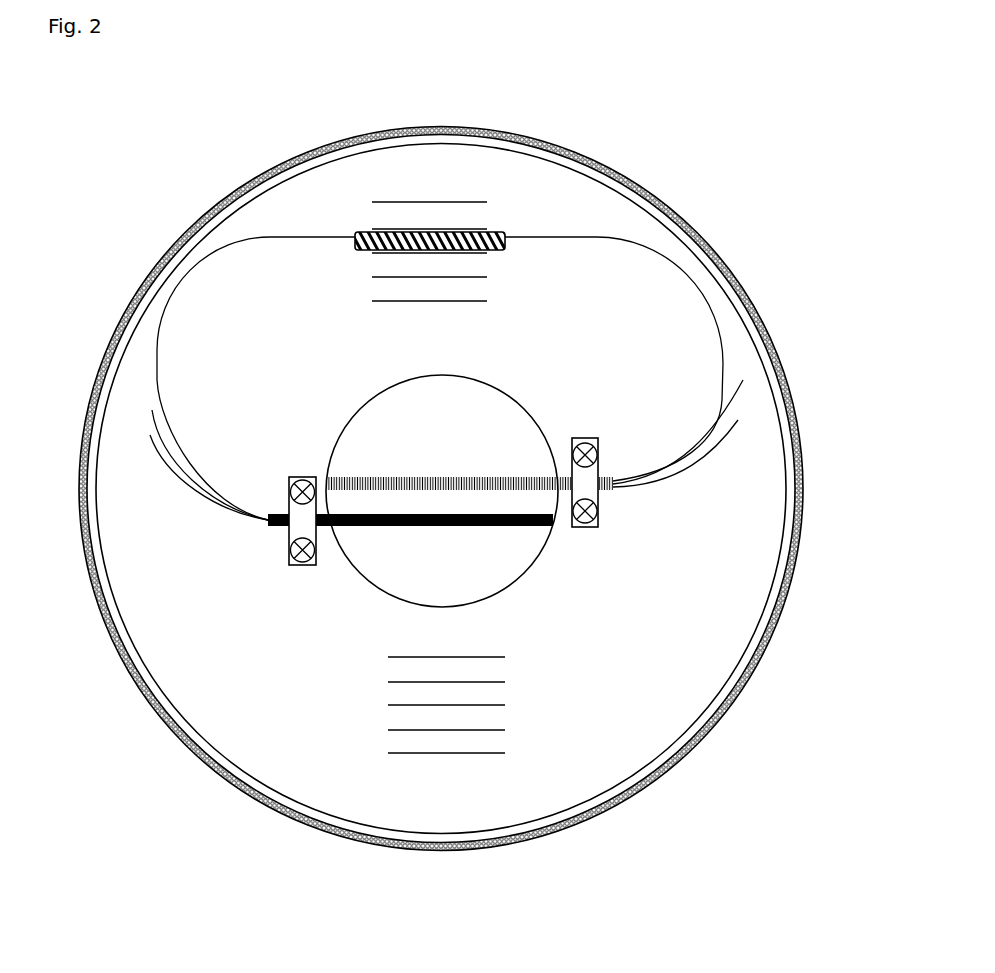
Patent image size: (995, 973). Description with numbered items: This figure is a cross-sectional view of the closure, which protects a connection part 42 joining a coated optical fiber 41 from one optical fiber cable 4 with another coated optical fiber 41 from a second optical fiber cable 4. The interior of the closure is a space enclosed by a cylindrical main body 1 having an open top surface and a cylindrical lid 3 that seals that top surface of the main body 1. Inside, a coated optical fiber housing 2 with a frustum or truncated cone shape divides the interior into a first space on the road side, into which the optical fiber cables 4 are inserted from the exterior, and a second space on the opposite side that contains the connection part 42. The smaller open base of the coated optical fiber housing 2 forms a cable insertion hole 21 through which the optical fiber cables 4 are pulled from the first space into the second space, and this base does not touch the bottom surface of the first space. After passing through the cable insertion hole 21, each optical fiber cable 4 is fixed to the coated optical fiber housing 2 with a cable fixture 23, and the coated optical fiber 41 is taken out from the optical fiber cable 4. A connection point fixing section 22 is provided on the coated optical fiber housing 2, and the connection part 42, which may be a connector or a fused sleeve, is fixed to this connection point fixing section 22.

The main body 1 is at (783, 528).
The coated optical fiber housing 2 is at (622, 708).
The lid 3 is at (805, 468).
The optical fiber cable 4 is at (282, 543).
The cable insertion hole 21 is at (395, 597).
The connection point fixing section 22 is at (463, 202).
The cable fixture 23 is at (598, 520).
The coated optical fiber 41 is at (182, 288).
The connection part 42 is at (355, 232).